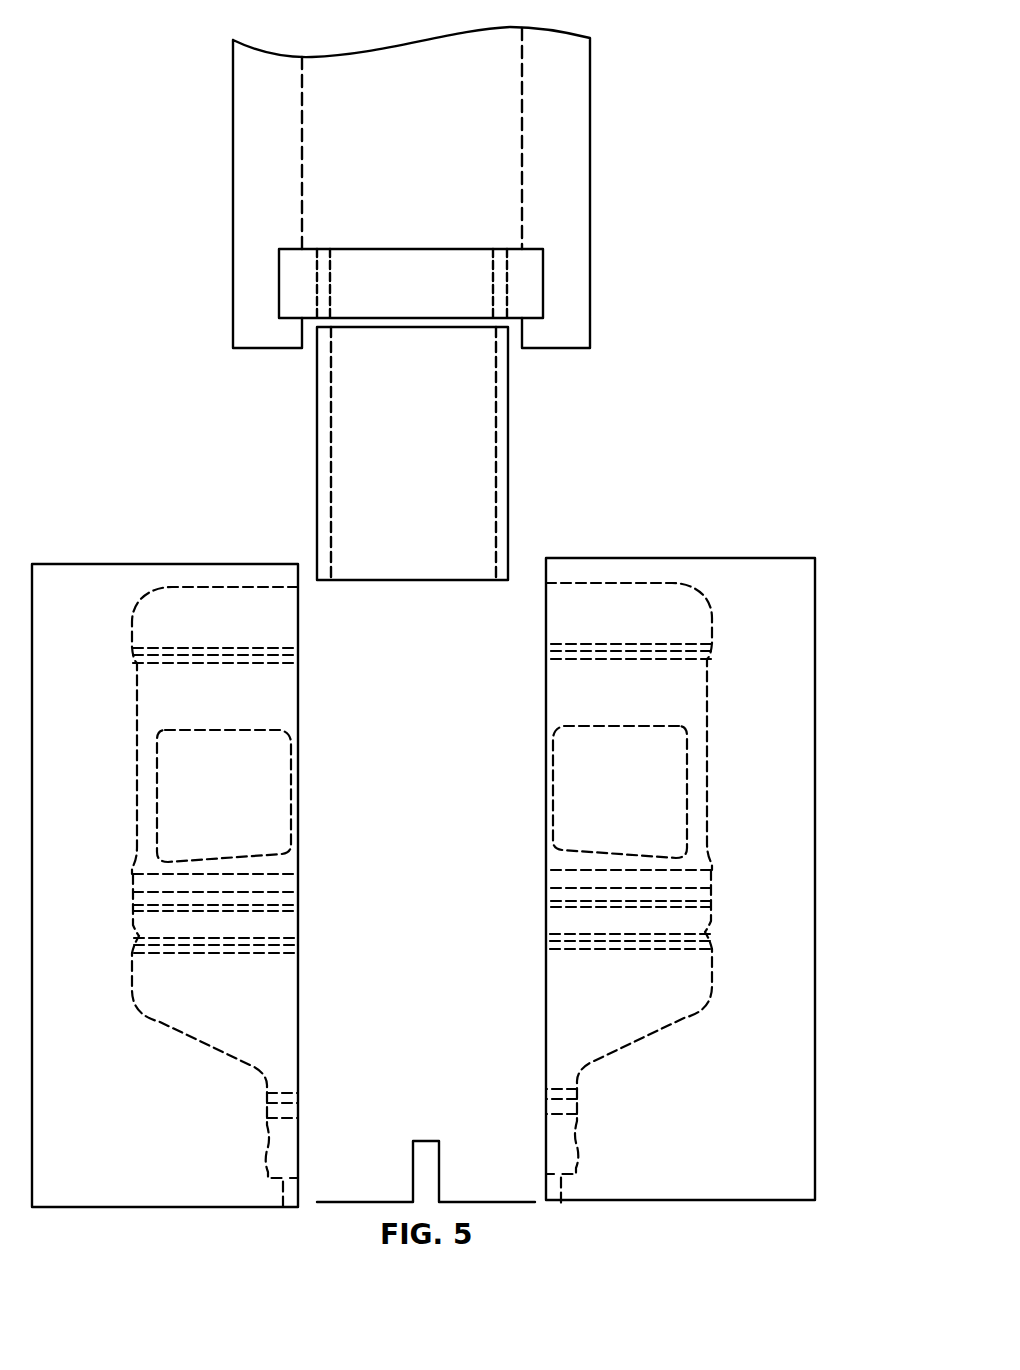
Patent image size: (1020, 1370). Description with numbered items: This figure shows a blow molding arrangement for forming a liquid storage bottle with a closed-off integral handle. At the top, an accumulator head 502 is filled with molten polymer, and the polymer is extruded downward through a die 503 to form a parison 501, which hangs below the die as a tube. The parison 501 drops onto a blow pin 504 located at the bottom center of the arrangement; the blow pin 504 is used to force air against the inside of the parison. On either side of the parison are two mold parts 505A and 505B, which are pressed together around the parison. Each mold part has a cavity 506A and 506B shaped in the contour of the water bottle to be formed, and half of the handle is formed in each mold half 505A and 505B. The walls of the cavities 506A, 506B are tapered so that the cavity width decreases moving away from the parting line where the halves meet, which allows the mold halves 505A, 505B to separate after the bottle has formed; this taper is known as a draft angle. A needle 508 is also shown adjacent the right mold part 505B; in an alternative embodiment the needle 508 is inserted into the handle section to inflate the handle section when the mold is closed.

The parison 501 is at (508, 452).
The accumulator head 502 is at (590, 83).
The die 503 is at (543, 278).
The blow pin 504 is at (428, 1140).
The mold part 505A is at (164, 562).
The mold part 505B is at (680, 557).
The cavity 506A is at (316, 688).
The cavity 506B is at (530, 702).
The needle 508 is at (546, 829).